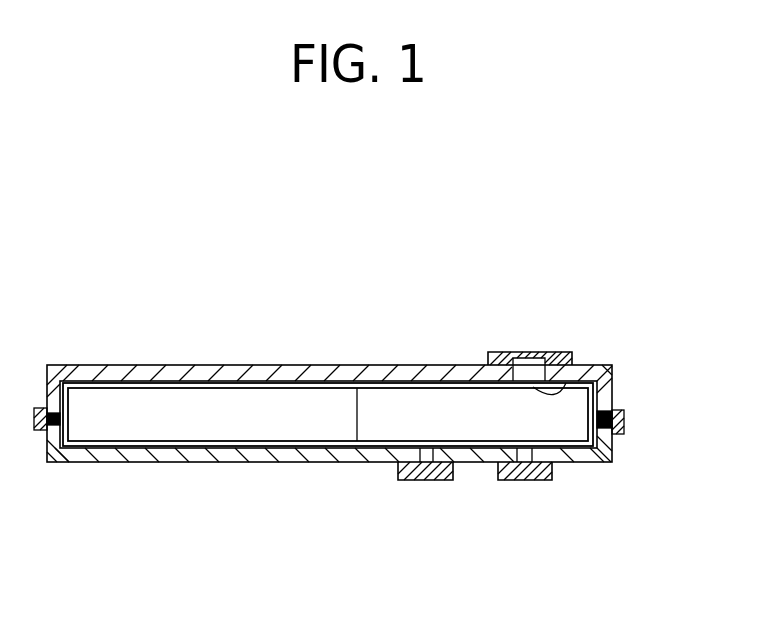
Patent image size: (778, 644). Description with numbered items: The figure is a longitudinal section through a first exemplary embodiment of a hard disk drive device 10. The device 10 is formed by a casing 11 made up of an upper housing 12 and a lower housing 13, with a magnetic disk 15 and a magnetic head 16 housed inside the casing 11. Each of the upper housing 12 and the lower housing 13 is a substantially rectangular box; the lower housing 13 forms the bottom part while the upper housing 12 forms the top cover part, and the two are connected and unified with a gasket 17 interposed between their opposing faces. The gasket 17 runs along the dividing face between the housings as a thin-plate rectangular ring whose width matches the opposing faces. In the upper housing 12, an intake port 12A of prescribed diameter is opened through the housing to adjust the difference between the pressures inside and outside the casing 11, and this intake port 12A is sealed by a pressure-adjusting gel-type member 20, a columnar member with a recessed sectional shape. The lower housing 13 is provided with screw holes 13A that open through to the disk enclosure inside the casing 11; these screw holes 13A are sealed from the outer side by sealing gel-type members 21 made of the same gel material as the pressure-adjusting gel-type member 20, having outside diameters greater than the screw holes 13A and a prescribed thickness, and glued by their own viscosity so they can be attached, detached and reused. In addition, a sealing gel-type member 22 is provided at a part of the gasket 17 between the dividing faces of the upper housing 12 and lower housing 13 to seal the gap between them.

The hard disk drive device 10 is at (629, 246).
The casing 11 is at (287, 366).
The upper housing 12 is at (198, 378).
The intake port 12A is at (566, 383).
The lower housing 13 is at (216, 454).
The screw holes 13A is at (415, 483).
The magnetic disk 15 is at (408, 373).
The magnetic head 16 is at (106, 380).
The gasket 17 is at (612, 395).
The pressure-adjusting gel-type member 20 is at (503, 352).
The sealing gel-type members 21 is at (444, 483).
The sealing gel-type member 22 is at (625, 426).